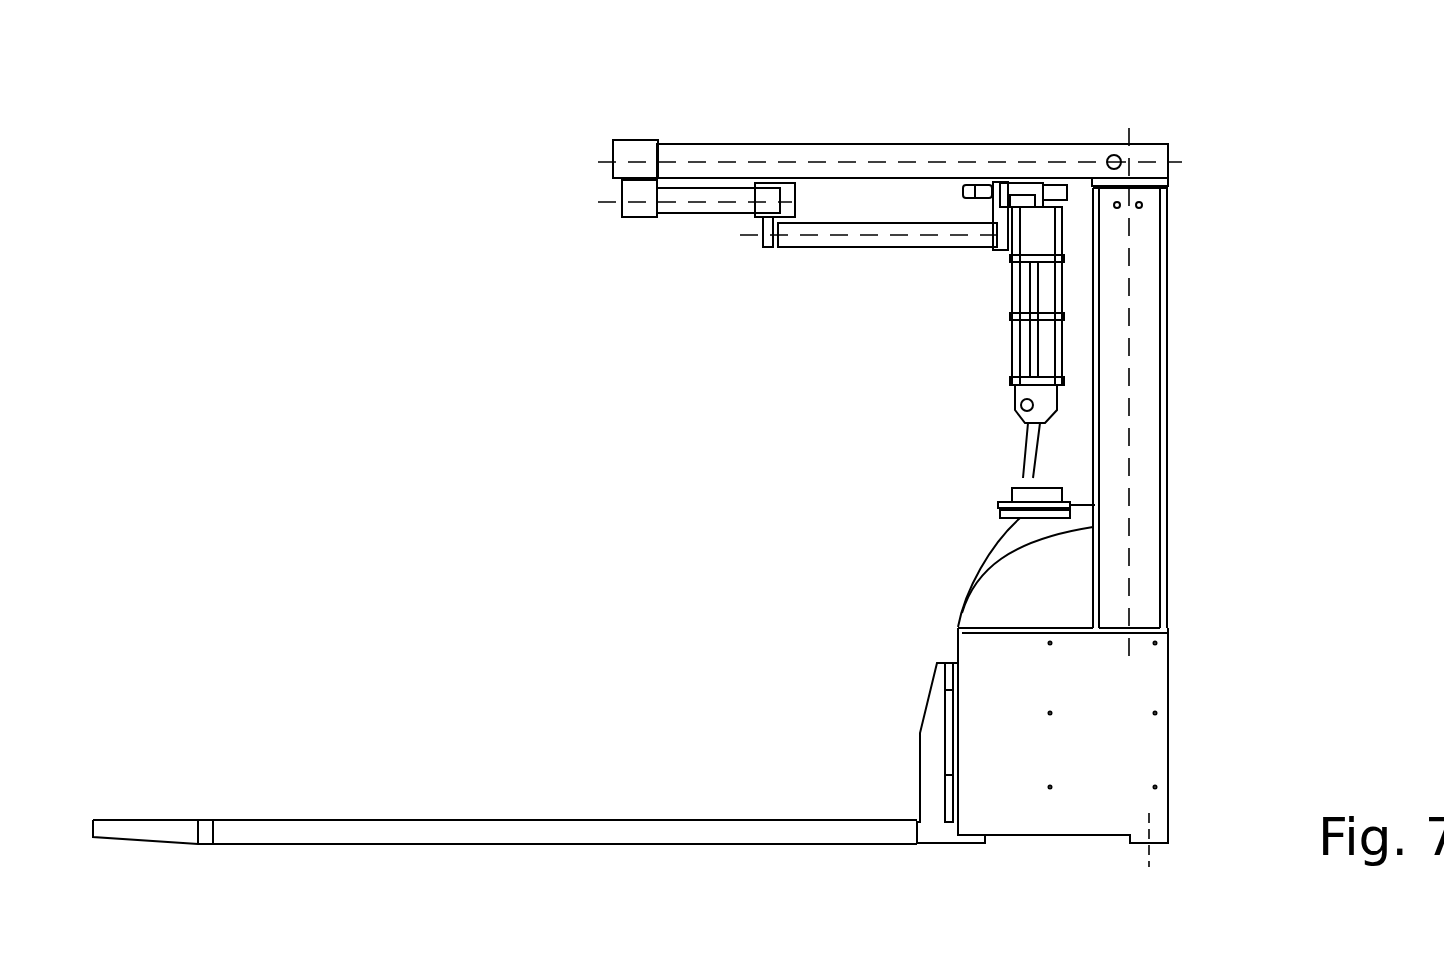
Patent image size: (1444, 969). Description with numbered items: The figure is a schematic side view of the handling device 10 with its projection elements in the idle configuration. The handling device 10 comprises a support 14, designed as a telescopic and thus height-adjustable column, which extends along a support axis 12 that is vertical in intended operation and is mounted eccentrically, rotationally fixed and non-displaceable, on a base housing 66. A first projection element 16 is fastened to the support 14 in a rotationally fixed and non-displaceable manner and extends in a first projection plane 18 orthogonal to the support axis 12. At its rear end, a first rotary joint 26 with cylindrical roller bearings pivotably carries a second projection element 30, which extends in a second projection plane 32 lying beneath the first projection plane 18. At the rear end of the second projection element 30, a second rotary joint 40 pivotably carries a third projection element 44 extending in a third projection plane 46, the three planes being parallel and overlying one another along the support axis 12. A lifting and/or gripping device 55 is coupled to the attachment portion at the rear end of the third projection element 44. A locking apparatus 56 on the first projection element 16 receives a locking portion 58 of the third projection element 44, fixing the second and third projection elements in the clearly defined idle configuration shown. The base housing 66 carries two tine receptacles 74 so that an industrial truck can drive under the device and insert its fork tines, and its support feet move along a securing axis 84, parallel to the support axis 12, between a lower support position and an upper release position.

The handling device 10 is at (475, 90).
The support axis 12 is at (1128, 470).
The support 14 is at (1143, 370).
The first projection element 16 is at (945, 155).
The first projection plane 18 is at (843, 158).
The first rotary joint 26 is at (628, 152).
The second projection element 30 is at (667, 217).
The second projection plane 32 is at (717, 210).
The second rotary joint 40 is at (770, 245).
The third projection element 44 is at (887, 243).
The third projection plane 46 is at (953, 238).
The lifting and/or gripping device 55 is at (1028, 362).
The locking apparatus 56 is at (1067, 195).
The locking portion 58 is at (1045, 180).
The base housing 66 is at (1145, 680).
The tine receptacle 74 is at (273, 832).
The securing axis 84 is at (1149, 858).